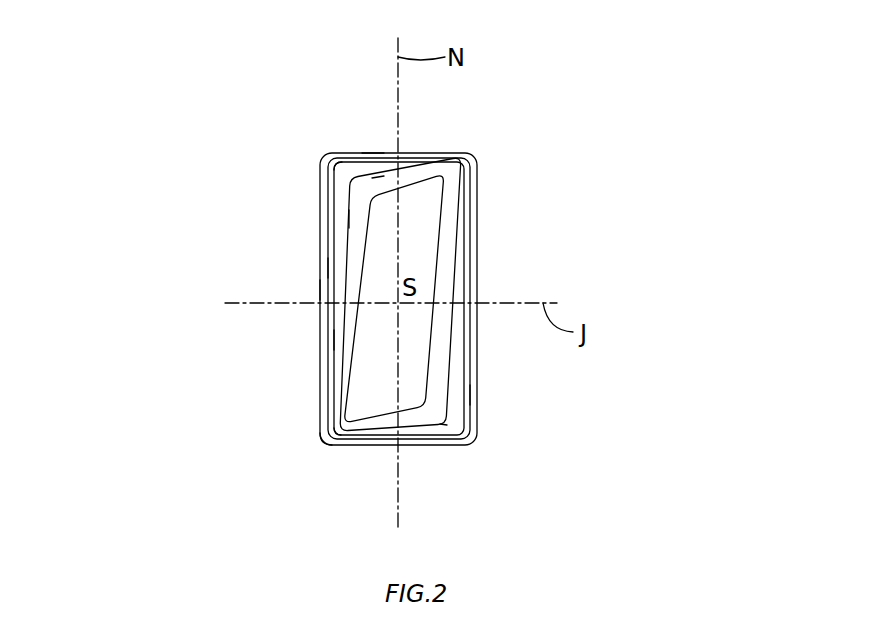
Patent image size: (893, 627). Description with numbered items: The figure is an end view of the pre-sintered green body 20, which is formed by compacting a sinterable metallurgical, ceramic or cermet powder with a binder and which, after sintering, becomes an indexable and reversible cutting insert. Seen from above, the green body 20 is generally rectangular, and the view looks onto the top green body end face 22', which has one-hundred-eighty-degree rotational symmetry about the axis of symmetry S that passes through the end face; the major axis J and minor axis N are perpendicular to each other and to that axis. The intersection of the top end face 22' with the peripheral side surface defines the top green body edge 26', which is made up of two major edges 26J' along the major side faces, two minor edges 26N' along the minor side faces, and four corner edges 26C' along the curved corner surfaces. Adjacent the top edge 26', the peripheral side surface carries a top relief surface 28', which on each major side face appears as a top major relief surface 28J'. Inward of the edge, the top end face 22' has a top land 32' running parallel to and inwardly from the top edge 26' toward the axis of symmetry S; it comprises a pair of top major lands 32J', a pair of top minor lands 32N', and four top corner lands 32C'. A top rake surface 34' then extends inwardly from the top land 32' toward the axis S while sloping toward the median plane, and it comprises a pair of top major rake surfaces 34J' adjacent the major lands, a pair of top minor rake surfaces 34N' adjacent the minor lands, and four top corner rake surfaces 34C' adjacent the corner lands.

The green body 20 is at (623, 232).
The top green body end face 22' is at (444, 273).
The top green body edge 26' is at (290, 299).
The top minor edge 26N' is at (345, 91).
The top major edge 26J' is at (188, 288).
The top corner edge 26C' is at (253, 475).
The top relief surface 28' is at (427, 298).
The top major relief surface 28J' is at (362, 327).
The top land 32' is at (323, 273).
The top minor land 32N' is at (274, 148).
The top major land 32J' is at (270, 355).
The top corner land 32C' is at (313, 486).
The top rake surface 34' is at (390, 283).
The top minor rake surface 34N' is at (467, 113).
The top major rake surface 34J' is at (238, 206).
The top corner rake surface 34C' is at (508, 471).